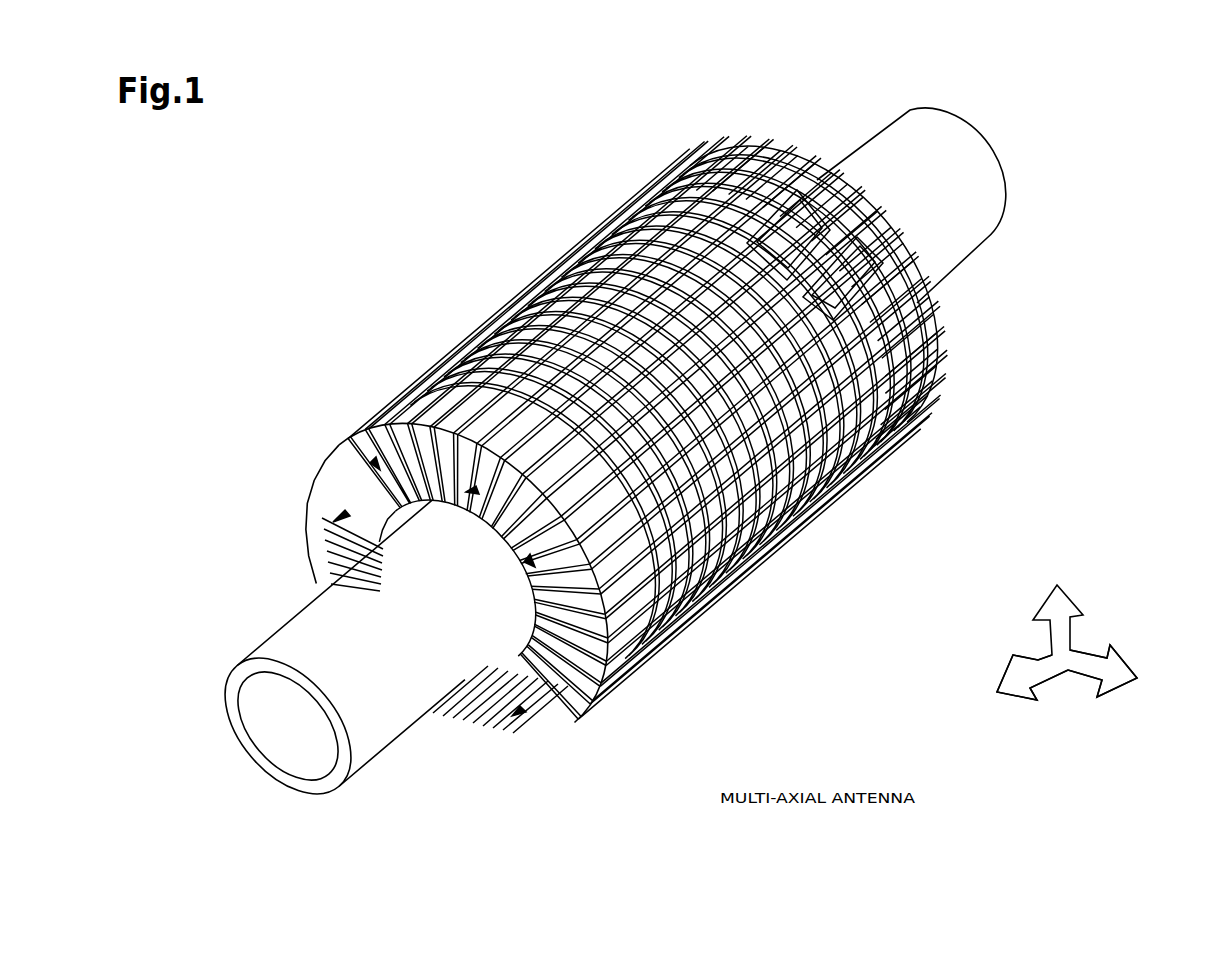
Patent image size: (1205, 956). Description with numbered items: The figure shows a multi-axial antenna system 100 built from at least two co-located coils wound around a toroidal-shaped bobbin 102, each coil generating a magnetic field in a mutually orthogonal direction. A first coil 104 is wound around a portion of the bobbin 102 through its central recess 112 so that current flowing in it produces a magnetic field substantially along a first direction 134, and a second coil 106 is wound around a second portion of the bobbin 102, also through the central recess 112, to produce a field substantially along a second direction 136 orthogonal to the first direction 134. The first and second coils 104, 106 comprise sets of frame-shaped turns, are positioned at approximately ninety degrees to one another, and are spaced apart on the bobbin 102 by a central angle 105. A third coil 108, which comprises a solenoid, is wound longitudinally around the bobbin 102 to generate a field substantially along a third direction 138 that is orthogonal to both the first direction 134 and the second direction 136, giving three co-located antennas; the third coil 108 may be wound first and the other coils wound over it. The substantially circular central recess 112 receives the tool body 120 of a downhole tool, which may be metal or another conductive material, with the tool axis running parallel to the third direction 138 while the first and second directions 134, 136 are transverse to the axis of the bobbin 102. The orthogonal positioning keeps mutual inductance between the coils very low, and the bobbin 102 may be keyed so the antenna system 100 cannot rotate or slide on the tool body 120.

The multi-axial antenna system 100 is at (458, 226).
The bobbin 102 is at (470, 523).
The first coil 104 is at (815, 172).
The central angle 105 is at (345, 512).
The second coil 106 is at (324, 600).
The third coil 108 is at (575, 412).
The central recess 112 is at (402, 538).
The tool body 120 is at (988, 225).
The first direction 134 is at (1077, 680).
The second direction 136 is at (1074, 632).
The third direction 138 is at (1035, 652).